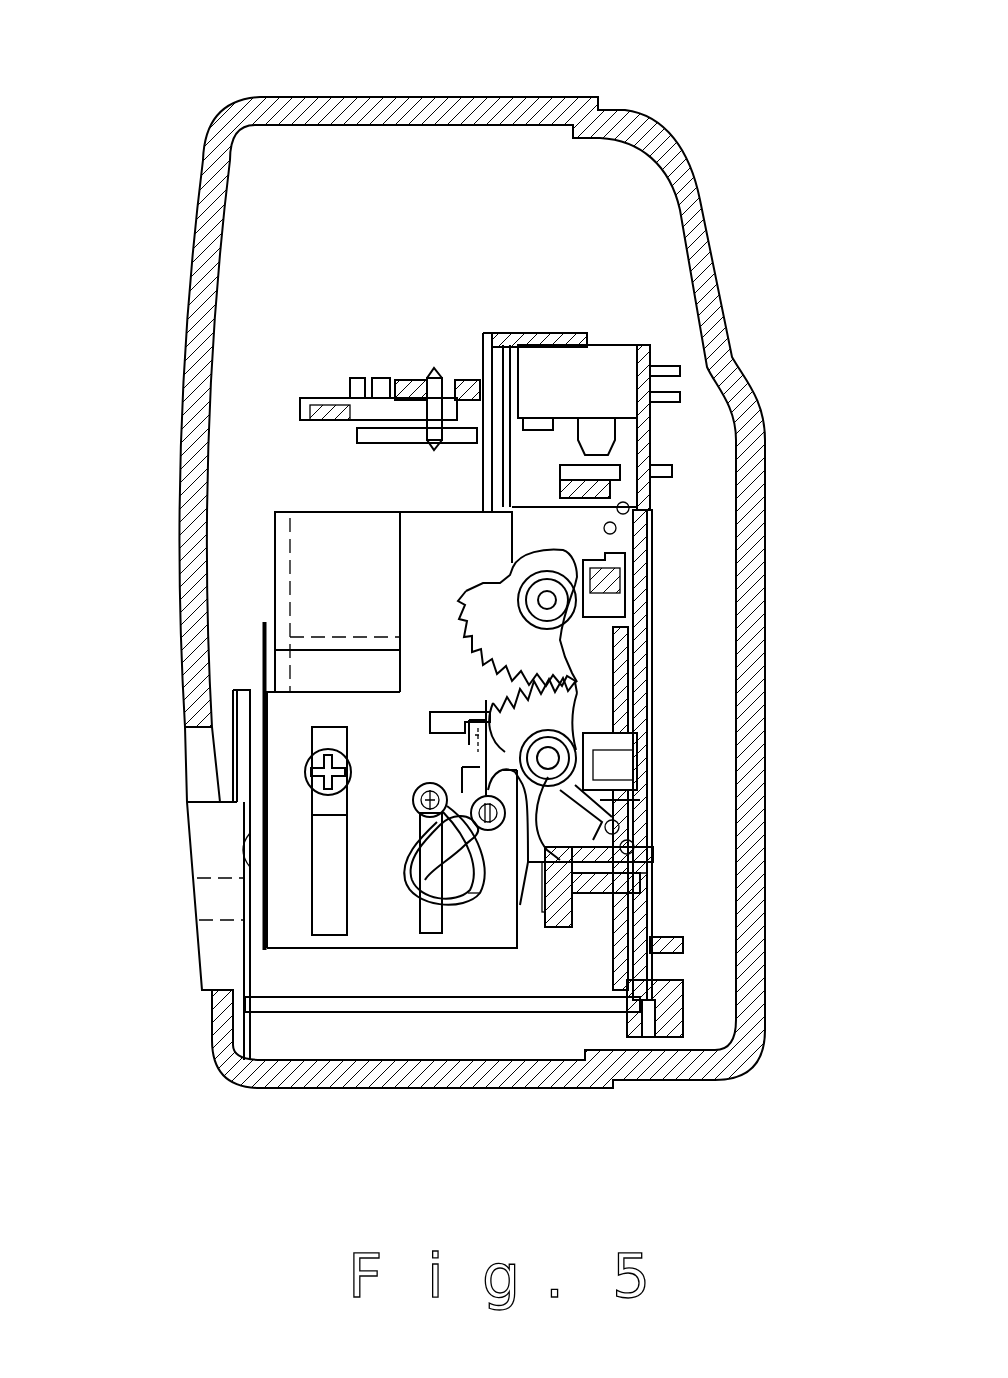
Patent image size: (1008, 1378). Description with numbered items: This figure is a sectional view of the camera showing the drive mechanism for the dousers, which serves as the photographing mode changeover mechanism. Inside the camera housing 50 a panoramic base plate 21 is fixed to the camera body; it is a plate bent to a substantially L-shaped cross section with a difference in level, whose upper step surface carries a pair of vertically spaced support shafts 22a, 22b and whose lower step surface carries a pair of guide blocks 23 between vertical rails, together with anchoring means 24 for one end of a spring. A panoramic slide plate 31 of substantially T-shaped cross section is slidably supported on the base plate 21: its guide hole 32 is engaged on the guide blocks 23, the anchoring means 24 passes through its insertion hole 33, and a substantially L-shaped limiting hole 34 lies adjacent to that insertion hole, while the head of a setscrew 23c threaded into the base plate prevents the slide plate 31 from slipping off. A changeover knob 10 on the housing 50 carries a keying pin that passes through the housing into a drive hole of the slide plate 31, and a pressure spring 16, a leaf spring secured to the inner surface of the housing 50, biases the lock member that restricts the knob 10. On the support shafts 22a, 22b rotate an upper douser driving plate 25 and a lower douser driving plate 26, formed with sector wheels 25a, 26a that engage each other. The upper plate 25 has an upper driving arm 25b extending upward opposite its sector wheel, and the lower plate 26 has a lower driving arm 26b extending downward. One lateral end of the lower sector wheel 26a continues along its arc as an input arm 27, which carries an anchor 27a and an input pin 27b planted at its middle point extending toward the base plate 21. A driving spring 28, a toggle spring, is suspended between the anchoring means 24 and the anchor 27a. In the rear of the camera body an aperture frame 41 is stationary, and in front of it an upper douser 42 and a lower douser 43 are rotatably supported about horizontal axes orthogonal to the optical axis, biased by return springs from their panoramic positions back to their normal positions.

The camera housing 50 is at (470, 97).
The changeover knob 10 is at (200, 858).
The pressure spring 16 is at (262, 642).
The panoramic base plate 21 is at (300, 520).
The support shaft 22a is at (525, 590).
The support shaft 22b is at (572, 862).
The guide block 23 is at (348, 727).
The setscrew 23c is at (305, 772).
The anchoring means 24 is at (414, 801).
The upper douser driving plate 25 is at (624, 577).
The sector wheel 25a is at (475, 620).
The upper driving arm 25b is at (647, 533).
The lower douser driving plate 26 is at (643, 714).
The sector wheel 26a is at (493, 697).
The lower driving arm 26b is at (600, 778).
The input arm 27 is at (492, 827).
The anchor 27a is at (520, 905).
The input pin 27b is at (470, 733).
The driving spring 28 is at (473, 900).
The panoramic slide plate 31 is at (377, 945).
The guide hole 32 is at (327, 928).
The insertion hole 33 is at (428, 925).
The limiting hole 34 is at (460, 738).
The aperture frame 41 is at (647, 640).
The upper douser 42 is at (650, 548).
The lower douser 43 is at (645, 800).